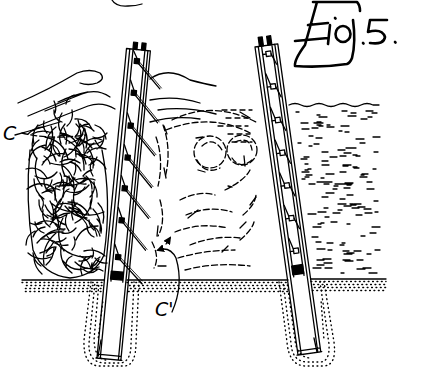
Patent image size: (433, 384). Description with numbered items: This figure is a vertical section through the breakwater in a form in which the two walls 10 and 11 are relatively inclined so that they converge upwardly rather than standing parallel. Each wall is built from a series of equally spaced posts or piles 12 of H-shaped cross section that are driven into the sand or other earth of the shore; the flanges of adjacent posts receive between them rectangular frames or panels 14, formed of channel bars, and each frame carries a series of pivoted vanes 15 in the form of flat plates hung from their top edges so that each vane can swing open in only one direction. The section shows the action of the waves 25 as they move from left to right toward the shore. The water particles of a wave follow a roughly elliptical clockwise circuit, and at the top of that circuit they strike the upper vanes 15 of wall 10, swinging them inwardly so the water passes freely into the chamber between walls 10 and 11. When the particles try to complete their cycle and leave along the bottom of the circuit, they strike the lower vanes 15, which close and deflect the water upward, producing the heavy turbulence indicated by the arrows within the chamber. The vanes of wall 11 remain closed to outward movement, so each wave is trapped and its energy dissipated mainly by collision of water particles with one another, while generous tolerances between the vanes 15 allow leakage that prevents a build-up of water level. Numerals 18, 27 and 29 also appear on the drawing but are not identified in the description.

The wall 10 is at (116, 51).
The wall 11 is at (272, 179).
The posts or piles 12 is at (96, 345).
The frames or panels 14 is at (271, 24).
The vanes 15 is at (145, 72).
The upper structure 18 is at (178, 7).
The waves 25 is at (65, 84).
The water 27 is at (351, 114).
The ground line 29 is at (353, 277).